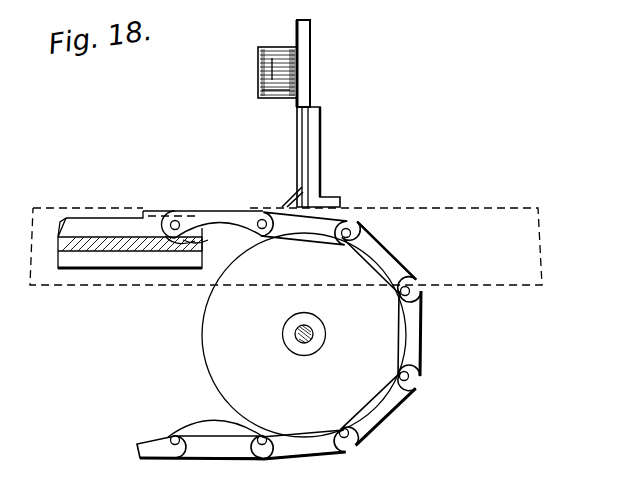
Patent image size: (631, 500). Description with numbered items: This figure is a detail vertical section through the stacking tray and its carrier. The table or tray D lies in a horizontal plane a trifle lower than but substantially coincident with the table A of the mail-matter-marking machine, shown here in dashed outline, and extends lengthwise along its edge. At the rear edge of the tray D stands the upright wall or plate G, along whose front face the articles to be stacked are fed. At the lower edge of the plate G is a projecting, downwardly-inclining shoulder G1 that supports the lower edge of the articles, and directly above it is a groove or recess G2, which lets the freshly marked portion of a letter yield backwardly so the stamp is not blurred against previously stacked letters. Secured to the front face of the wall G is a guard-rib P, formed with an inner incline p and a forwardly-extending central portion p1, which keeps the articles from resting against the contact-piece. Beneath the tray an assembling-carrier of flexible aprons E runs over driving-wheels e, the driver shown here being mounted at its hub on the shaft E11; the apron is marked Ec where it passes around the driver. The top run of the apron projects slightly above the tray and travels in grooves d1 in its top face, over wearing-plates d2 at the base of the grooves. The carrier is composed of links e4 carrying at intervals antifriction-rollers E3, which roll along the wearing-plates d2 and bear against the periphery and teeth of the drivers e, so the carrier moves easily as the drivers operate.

The table A is at (454, 208).
The upright wall or plate G is at (309, 80).
The groove or recess G2 is at (302, 110).
The shoulder G1 is at (294, 197).
The guard-rib P is at (258, 79).
The inner incline p is at (278, 63).
The forwardly-extending central portion p1 is at (258, 95).
The table or tray D is at (113, 215).
The grooves d1 is at (80, 218).
The wearing-plates d2 is at (64, 222).
The flexible aprons E is at (222, 211).
The antifriction-rollers E3 is at (178, 252).
The driving-wheels e is at (304, 335).
The shaft E11 is at (300, 343).
The chain link Ec is at (401, 271).
The links e4 is at (421, 340).